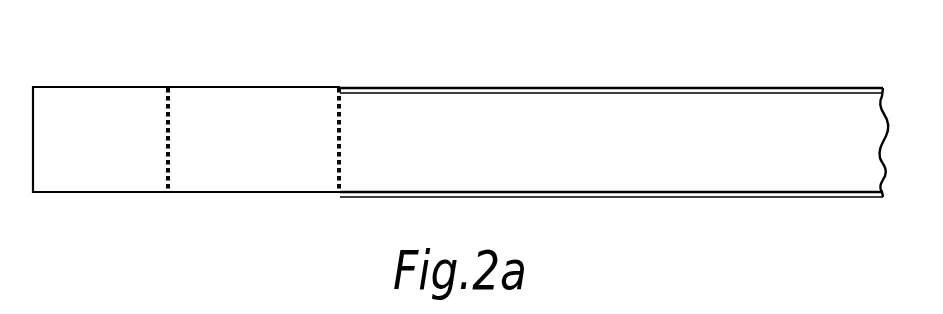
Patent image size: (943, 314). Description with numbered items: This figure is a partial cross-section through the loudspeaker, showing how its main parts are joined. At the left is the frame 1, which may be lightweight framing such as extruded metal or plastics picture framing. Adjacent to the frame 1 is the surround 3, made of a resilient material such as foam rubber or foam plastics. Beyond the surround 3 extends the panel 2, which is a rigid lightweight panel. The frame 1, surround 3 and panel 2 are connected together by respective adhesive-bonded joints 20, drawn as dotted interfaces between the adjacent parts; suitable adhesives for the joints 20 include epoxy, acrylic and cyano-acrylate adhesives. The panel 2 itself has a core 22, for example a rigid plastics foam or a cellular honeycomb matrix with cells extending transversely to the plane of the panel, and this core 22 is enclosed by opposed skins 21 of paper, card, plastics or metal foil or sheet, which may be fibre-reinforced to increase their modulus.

The frame 1 is at (65, 86).
The surround 3 is at (262, 87).
The adhesive-bonded joint 20 is at (168, 87).
The panel 2 is at (614, 123).
The skin 21 is at (595, 88).
The core 22 is at (503, 113).